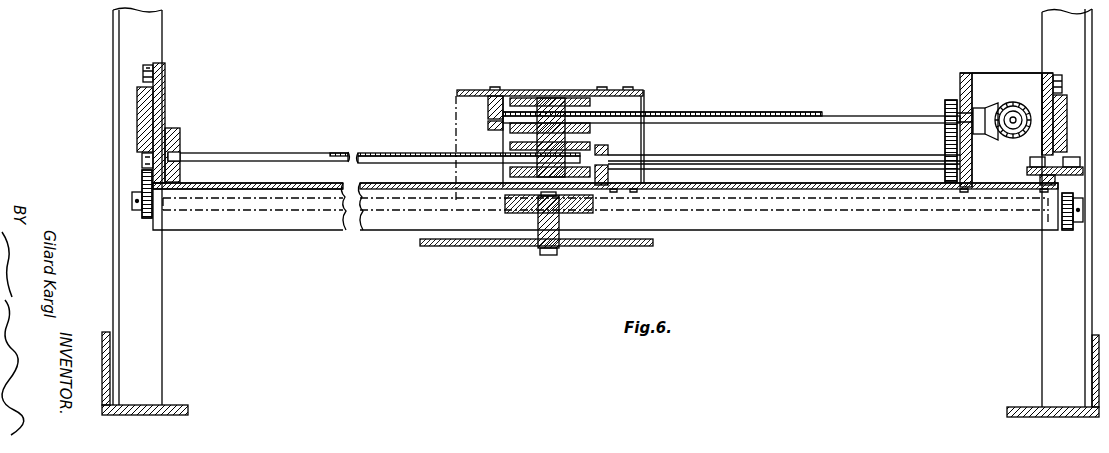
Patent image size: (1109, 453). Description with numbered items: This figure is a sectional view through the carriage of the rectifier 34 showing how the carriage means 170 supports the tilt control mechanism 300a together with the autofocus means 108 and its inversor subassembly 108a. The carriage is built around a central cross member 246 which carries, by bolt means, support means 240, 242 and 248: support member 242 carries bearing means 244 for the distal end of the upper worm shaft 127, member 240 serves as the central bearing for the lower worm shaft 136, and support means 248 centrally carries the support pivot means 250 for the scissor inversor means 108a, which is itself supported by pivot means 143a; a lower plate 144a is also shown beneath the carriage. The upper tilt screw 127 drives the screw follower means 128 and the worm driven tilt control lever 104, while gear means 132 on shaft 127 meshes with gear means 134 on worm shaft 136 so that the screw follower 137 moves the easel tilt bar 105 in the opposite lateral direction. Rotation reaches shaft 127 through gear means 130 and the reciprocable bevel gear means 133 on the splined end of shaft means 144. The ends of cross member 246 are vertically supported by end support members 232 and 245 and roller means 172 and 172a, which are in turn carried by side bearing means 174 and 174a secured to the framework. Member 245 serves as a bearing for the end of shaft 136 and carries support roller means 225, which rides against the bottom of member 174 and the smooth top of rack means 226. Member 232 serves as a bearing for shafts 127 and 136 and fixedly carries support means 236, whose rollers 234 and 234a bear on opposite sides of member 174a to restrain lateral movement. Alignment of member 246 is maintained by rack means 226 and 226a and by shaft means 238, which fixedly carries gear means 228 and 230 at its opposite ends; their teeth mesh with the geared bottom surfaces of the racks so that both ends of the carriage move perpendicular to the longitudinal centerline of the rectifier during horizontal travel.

The rectifier 34 is at (162, 290).
The worm driven tilt control lever 104 is at (512, 90).
The worm driven tilt control lever 105 is at (590, 174).
The autofocus means 108 is at (402, 136).
The inversor means 108a is at (420, 251).
The worm shaft 127 is at (772, 115).
The screw follower means 128 is at (553, 118).
The gear means 130 is at (967, 83).
The gear means 132 is at (945, 99).
The reciprocable gear means 133 is at (1030, 95).
The gear means 134 is at (945, 151).
The worm shaft 136 is at (792, 157).
The screw follower 137 is at (547, 177).
The pivot means 143a is at (553, 256).
The shaft means 144 is at (1013, 136).
The lower plate 144a is at (588, 245).
The carriage means 170 is at (261, 227).
The roller means 172 is at (143, 72).
The roller means 172a is at (1055, 75).
The side bearing means 174 is at (137, 115).
The side bearing means 174a is at (1040, 167).
The support roller means 225 is at (142, 158).
The rack means 226 is at (142, 180).
The rack means 226a is at (1089, 192).
The gear means 228 is at (1063, 232).
The gear means 230 is at (132, 210).
The end support member 232 is at (1047, 73).
The roller 234 is at (1070, 150).
The roller 234a is at (1040, 168).
The support means 236 is at (1045, 160).
The shaft means 238 is at (352, 221).
The support means 240 is at (608, 151).
The support member 242 is at (550, 105).
The bearing means 244 is at (488, 104).
The end support member 245 is at (165, 108).
The cross member 246 is at (904, 221).
The support means 248 is at (530, 212).
The central support pivot means 250 is at (543, 212).
The tilt control mechanism 300a is at (624, 105).